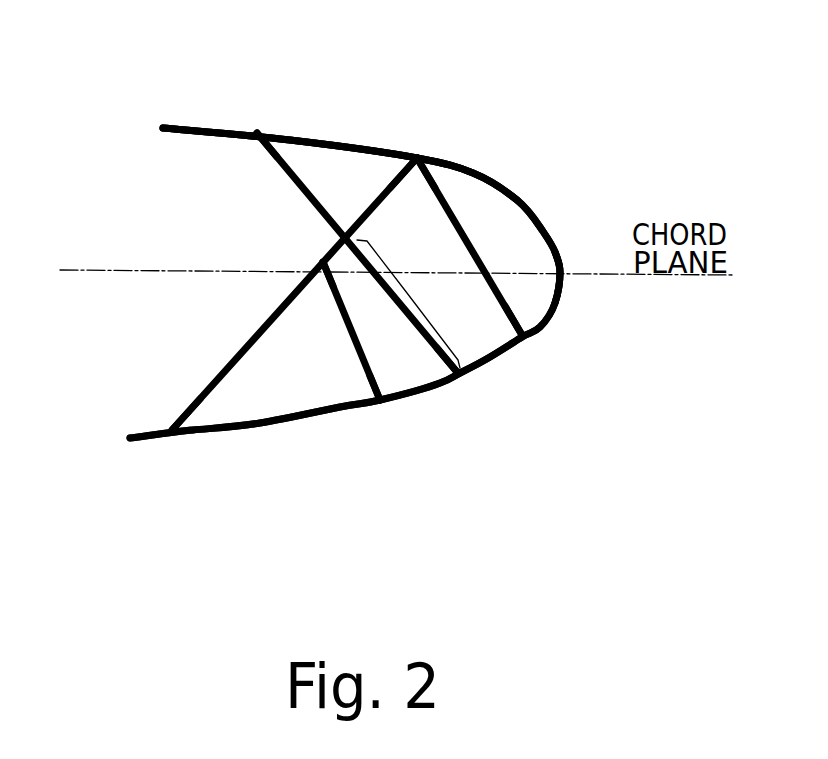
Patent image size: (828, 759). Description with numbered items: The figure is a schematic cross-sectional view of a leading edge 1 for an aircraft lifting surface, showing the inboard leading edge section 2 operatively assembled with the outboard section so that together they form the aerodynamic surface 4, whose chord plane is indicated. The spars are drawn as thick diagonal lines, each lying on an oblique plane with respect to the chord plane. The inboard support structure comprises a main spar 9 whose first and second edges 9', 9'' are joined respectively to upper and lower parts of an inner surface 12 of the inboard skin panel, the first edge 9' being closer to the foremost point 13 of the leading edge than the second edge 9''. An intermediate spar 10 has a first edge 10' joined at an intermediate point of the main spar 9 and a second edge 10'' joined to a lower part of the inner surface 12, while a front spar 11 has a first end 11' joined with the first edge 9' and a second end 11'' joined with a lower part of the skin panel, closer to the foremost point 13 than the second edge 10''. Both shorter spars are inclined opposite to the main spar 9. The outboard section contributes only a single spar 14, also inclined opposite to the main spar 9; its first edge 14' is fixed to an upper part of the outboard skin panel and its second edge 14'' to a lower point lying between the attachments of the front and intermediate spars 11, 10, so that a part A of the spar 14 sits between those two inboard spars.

The leading edge 1 is at (589, 364).
The inboard leading edge section 2 is at (534, 189).
The aerodynamic surface 4 is at (473, 173).
The main spar 9 is at (273, 294).
The first edge of main spar 9' is at (397, 119).
The second edge of main spar 9'' is at (147, 387).
The intermediate spar 10 is at (338, 374).
The first edge of intermediate spar 10' is at (310, 313).
The second edge of intermediate spar 10'' is at (391, 431).
The front spar 11 is at (528, 246).
The first end of front spar 11' is at (448, 126).
The second end of front spar 11'' is at (521, 376).
The inner surface 12 is at (195, 153).
The foremost point 13 is at (563, 268).
The single spar 14 is at (357, 195).
The first edge of single spar 14' is at (218, 87).
The second edge of single spar 14'' is at (459, 417).
The part of the spar A is at (407, 293).